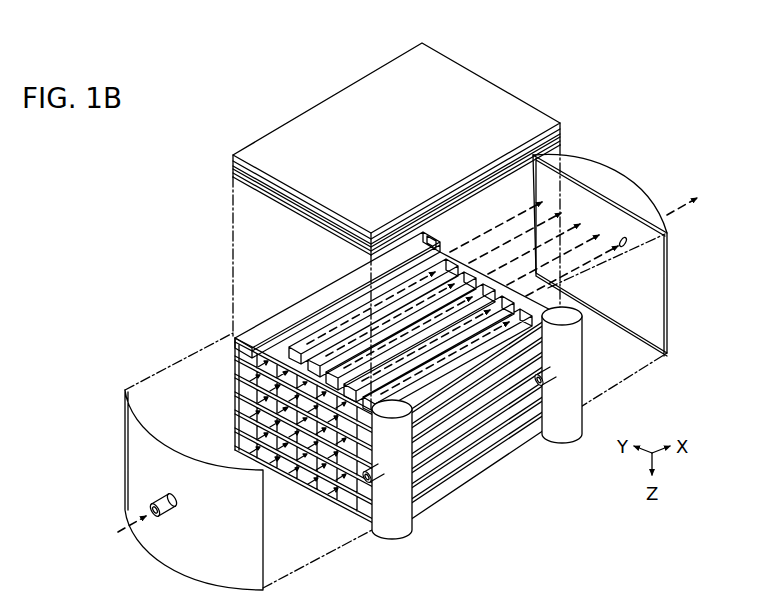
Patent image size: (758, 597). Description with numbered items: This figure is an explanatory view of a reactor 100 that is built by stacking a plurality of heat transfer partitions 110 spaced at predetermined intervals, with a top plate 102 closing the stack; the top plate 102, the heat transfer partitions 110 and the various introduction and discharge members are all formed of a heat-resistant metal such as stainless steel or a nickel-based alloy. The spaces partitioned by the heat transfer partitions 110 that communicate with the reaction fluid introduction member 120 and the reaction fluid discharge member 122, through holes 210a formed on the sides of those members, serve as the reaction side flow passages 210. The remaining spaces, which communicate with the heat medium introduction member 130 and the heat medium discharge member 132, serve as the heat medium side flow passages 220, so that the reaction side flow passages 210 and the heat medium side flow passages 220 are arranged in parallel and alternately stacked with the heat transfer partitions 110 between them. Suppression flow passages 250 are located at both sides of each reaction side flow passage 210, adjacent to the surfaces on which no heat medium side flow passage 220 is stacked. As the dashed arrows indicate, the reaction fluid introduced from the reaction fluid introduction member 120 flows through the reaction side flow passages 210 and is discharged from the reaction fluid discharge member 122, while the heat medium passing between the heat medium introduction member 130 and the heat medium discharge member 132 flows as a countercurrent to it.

The reactor 100 is at (580, 13).
The top plate 102 is at (412, 142).
The heat transfer partitions 110 is at (257, 178).
The reaction fluid introduction member 120 is at (209, 547).
The reaction fluid discharge member 122 is at (622, 192).
The heat medium introduction member 130 is at (583, 412).
The heat medium discharge member 132 is at (413, 512).
The reaction side flow passage 210 is at (345, 396).
The holes 210a is at (238, 448).
The heat medium side flow passage 220 is at (246, 173).
The suppression flow passage 250 is at (308, 303).